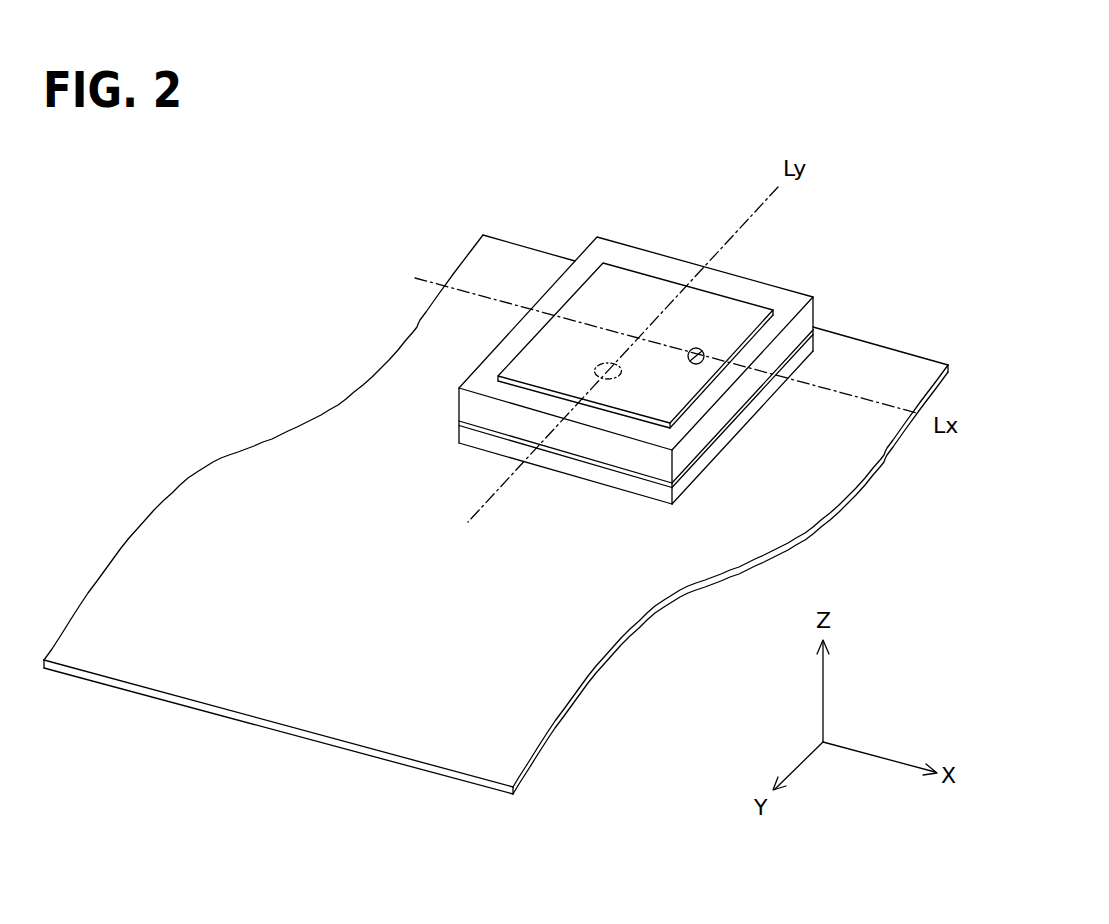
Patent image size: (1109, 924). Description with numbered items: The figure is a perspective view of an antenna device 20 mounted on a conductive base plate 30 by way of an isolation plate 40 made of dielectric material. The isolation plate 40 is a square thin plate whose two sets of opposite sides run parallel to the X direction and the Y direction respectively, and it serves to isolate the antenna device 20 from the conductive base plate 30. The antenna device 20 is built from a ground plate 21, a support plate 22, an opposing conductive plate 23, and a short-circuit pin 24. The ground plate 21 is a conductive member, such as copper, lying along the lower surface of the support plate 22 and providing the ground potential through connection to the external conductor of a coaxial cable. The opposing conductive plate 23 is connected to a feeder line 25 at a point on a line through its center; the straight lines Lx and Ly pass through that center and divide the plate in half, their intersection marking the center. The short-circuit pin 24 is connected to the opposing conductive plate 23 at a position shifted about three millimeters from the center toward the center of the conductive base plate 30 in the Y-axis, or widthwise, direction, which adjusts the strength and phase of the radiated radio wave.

The antenna device 20 is at (659, 321).
The ground plate 21 is at (814, 328).
The support plate 22 is at (813, 302).
The opposing conductive plate 23 is at (537, 357).
The short-circuit pin 24 is at (622, 367).
The feeder line 25 is at (697, 348).
The conductive base plate 30 is at (505, 740).
The isolation plate 40 is at (816, 331).